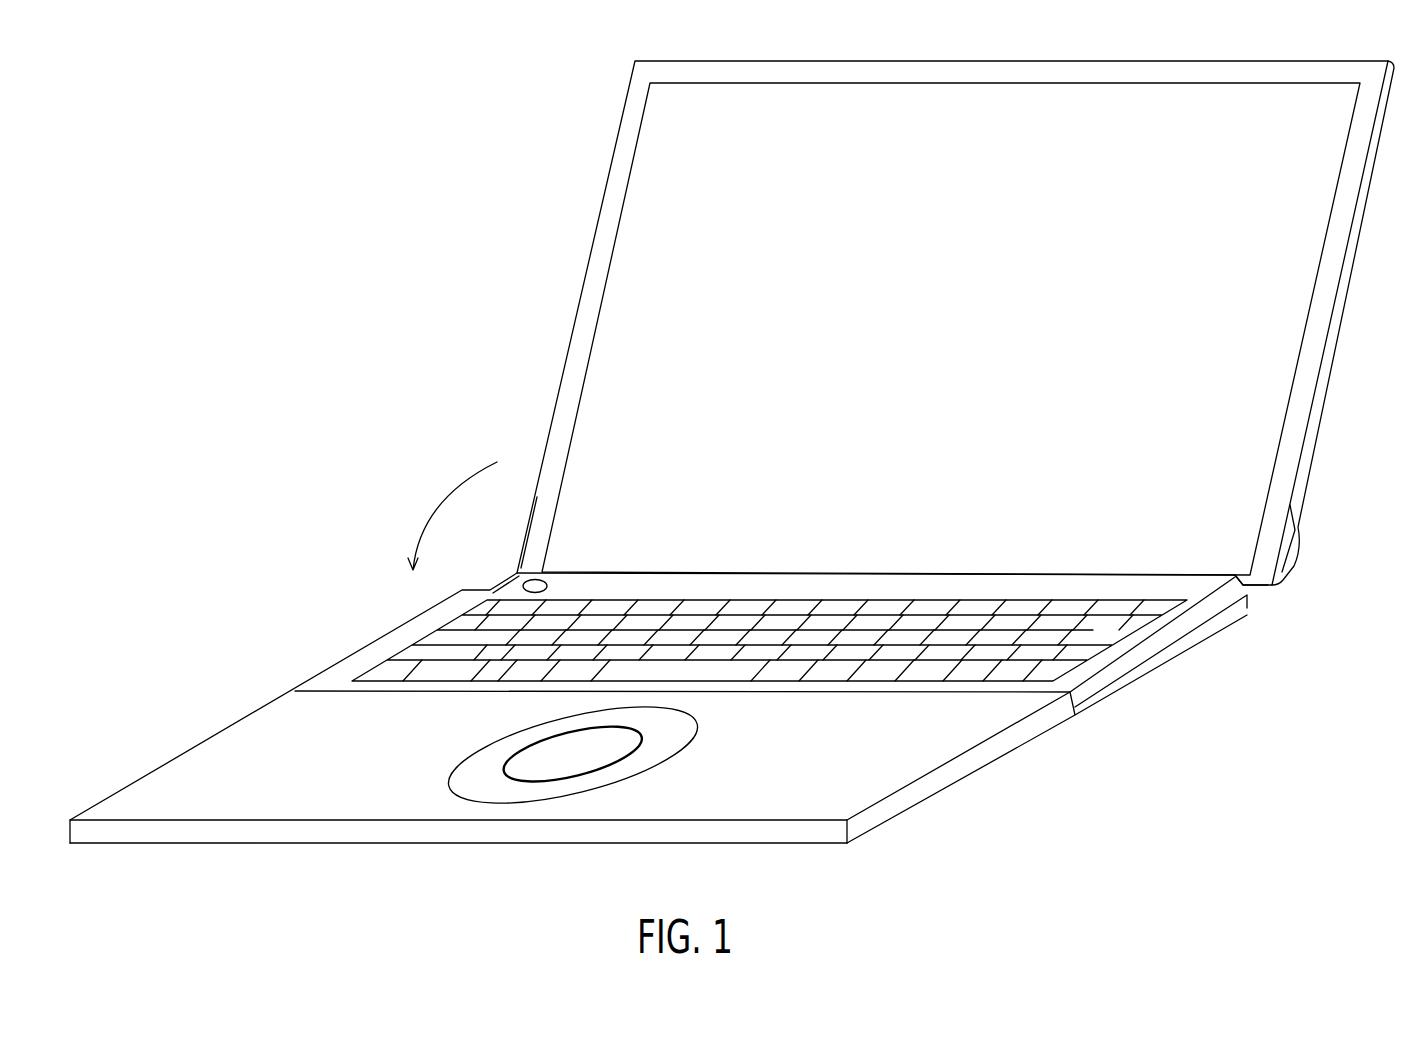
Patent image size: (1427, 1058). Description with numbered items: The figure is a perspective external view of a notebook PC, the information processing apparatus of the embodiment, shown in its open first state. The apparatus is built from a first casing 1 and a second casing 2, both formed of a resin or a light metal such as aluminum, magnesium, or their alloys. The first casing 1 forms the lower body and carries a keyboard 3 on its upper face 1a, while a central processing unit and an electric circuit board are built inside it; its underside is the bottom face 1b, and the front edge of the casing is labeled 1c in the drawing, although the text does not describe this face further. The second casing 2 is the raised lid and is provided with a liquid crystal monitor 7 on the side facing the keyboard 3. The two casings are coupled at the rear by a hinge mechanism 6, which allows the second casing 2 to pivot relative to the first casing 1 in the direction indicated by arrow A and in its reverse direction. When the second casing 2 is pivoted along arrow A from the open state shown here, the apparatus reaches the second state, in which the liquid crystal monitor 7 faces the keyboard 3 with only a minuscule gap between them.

The first casing 1 is at (930, 785).
The upper face 1a is at (926, 730).
The bottom face 1b is at (443, 843).
The front surface of main body 1c is at (355, 830).
The second casing 2 is at (1330, 345).
The keyboard 3 is at (1122, 628).
The hinge mechanism 6 is at (1284, 583).
The liquid crystal monitor 7 is at (1285, 267).
The arrow A is at (437, 505).